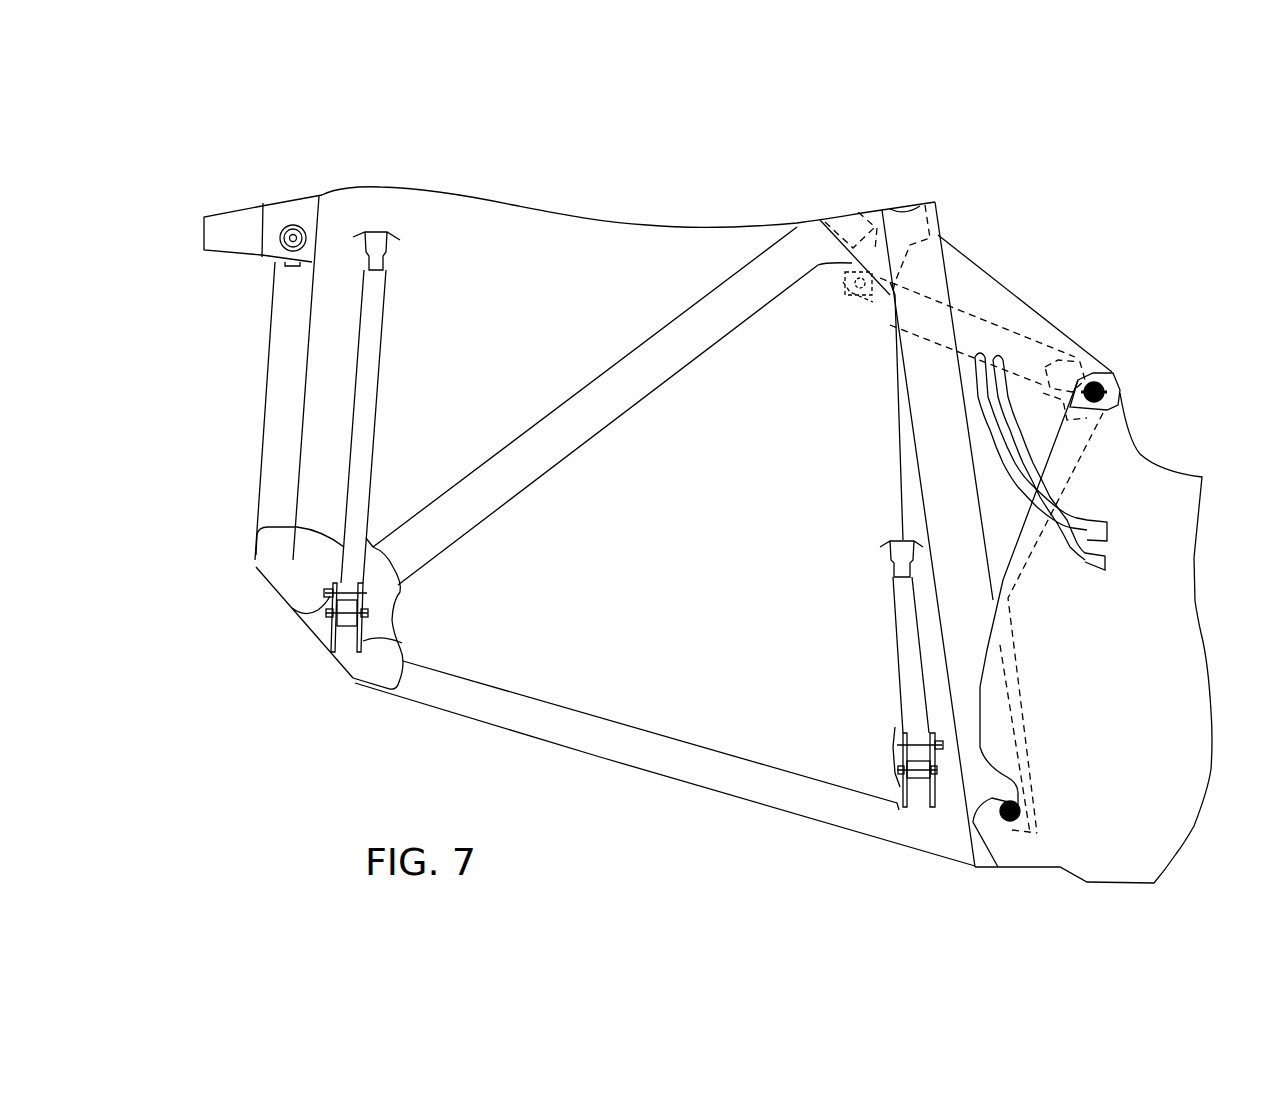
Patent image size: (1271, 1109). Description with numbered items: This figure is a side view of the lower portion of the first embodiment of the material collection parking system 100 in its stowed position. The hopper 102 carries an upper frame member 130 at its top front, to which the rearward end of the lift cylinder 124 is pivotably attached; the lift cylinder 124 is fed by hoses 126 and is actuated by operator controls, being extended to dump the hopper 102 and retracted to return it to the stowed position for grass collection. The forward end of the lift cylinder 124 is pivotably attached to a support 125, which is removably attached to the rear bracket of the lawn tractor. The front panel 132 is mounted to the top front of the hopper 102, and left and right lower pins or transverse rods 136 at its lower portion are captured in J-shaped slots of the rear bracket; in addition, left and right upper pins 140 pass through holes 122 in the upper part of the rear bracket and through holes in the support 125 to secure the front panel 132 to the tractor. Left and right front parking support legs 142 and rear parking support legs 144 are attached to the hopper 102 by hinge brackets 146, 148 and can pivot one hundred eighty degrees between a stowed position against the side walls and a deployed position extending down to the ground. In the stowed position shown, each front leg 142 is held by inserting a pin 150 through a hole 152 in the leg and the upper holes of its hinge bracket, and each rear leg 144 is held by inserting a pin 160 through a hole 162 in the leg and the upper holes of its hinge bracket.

The material collection parking system 100 is at (670, 160).
The hopper 102 is at (470, 313).
The holes 122 is at (1105, 408).
The lift cylinder 124 is at (1017, 333).
The support 125 is at (1077, 362).
The hoses 126 is at (1003, 440).
The upper frame member 130 is at (880, 210).
The front panel 132 is at (933, 392).
The lower pins or transverse rods 136 is at (1010, 822).
The upper pins 140 is at (1100, 385).
The front parking support legs 142 is at (889, 586).
The rear parking support legs 144 is at (379, 352).
The hinge bracket 146 is at (893, 793).
The hinge bracket 148 is at (397, 643).
The pin 150 is at (937, 747).
The hole 152 is at (915, 747).
The pin 160 is at (293, 608).
The hole 162 is at (352, 593).